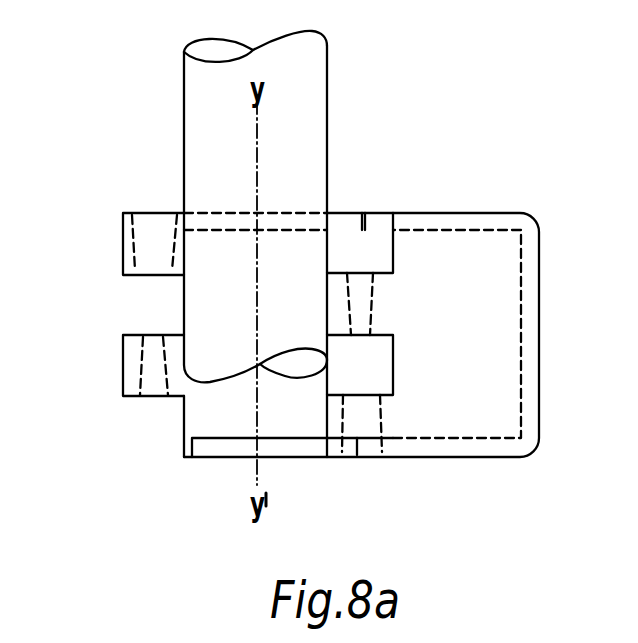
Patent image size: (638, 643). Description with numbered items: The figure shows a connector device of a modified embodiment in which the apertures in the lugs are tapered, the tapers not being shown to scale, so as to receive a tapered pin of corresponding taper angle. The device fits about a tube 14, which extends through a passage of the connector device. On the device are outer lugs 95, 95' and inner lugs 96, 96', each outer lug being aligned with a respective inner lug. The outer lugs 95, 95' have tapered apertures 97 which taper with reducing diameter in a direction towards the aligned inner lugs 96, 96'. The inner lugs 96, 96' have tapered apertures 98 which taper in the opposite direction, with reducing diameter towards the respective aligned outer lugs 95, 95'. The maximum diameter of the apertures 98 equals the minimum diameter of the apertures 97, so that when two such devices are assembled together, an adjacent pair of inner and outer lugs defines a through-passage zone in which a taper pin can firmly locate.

The tube 14 is at (208, 97).
The outer lug 95 is at (112, 244).
The outer lug 95' is at (393, 460).
The inner lug 96 is at (112, 365).
The inner lug 96' is at (337, 219).
The tapered aperture 97 is at (151, 223).
The tapered aperture 98 is at (360, 287).